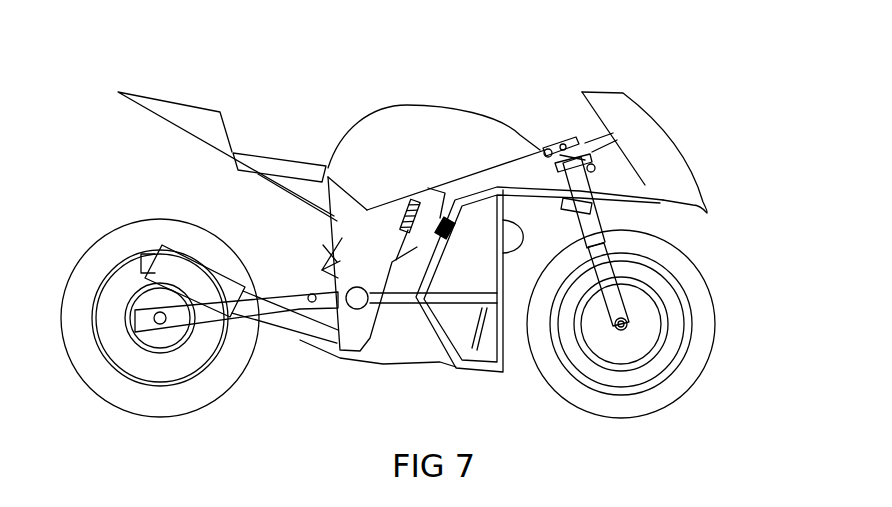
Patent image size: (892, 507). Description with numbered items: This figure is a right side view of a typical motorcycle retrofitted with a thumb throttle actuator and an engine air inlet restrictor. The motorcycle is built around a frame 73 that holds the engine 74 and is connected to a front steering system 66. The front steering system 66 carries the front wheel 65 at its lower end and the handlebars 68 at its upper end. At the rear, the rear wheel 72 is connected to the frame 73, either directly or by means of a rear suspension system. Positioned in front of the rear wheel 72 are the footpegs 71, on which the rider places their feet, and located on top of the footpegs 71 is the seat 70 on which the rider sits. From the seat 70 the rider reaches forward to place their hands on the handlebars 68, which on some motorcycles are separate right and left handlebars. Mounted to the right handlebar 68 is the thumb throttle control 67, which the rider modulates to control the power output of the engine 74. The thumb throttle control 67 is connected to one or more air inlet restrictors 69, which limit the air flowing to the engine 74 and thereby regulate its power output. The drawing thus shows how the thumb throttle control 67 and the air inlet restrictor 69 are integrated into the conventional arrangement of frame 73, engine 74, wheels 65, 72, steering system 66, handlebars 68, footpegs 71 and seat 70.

The front wheel 65 is at (695, 352).
The front steering system 66 is at (587, 215).
The thumb throttle control 67 is at (588, 167).
The handlebars 68 is at (557, 142).
The air inlet restrictor 69 is at (428, 213).
The seat 70 is at (293, 170).
The footpegs 71 is at (313, 296).
The rear wheel 72 is at (130, 235).
The frame 73 is at (370, 232).
The engine 74 is at (422, 335).